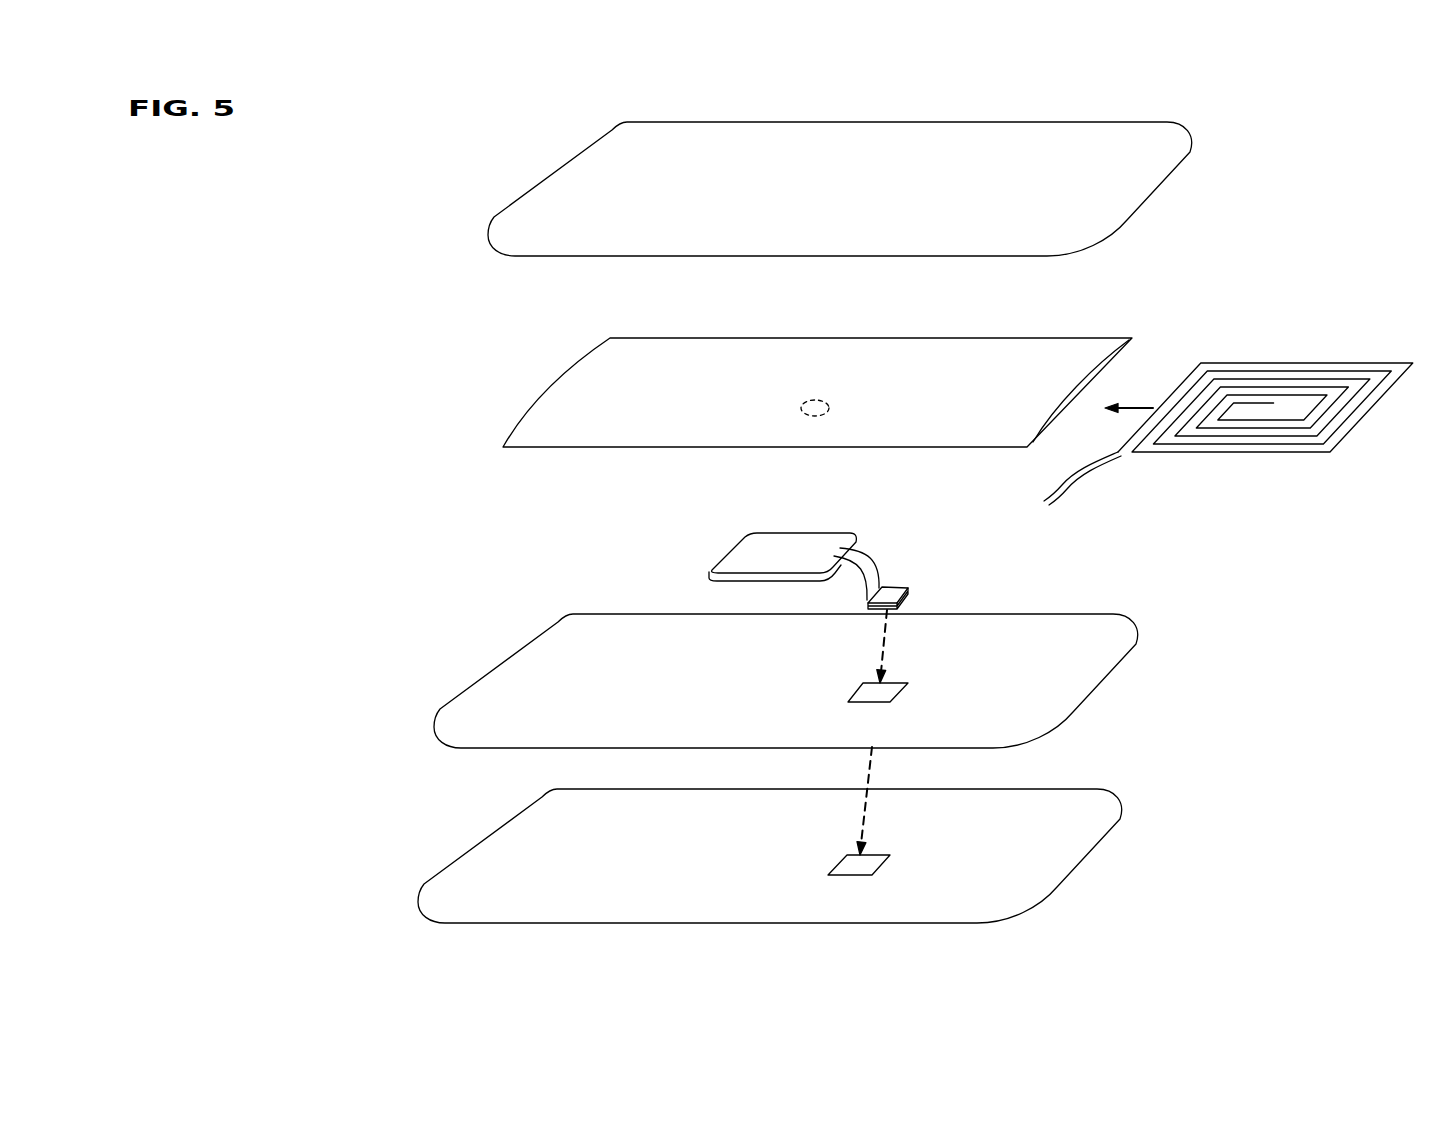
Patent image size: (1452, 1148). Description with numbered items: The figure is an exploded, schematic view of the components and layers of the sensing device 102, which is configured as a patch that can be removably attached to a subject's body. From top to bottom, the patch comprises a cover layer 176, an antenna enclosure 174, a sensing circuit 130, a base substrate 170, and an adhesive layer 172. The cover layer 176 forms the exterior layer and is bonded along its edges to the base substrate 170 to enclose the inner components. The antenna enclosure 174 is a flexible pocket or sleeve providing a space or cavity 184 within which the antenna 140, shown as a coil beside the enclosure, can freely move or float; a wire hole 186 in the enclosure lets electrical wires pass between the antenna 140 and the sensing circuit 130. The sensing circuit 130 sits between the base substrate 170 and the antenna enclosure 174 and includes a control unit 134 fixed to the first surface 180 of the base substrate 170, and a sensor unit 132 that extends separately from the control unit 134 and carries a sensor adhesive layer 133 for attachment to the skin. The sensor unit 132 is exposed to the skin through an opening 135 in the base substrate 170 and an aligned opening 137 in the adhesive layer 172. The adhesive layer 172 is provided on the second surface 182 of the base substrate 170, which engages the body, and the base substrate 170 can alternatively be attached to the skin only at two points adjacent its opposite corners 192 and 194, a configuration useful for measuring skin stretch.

The sensing device 102 is at (388, 138).
The cover layer 176 is at (540, 237).
The antenna enclosure 174 is at (588, 405).
The space or cavity 184 is at (1085, 390).
The wire hole 186 is at (830, 403).
The antenna 140 is at (1323, 372).
The sensing circuit 130 is at (626, 528).
The control unit 134 is at (835, 533).
The sensor unit 132 is at (895, 587).
The sensor adhesive layer 133 is at (908, 598).
The base substrate 170 is at (525, 715).
The corner 192 is at (548, 619).
The first surface 180 is at (1010, 667).
The corner 194 is at (1023, 710).
The opening 135 is at (865, 688).
The second surface 182 is at (905, 711).
The adhesive layer 172 is at (484, 867).
The opening 137 is at (843, 865).